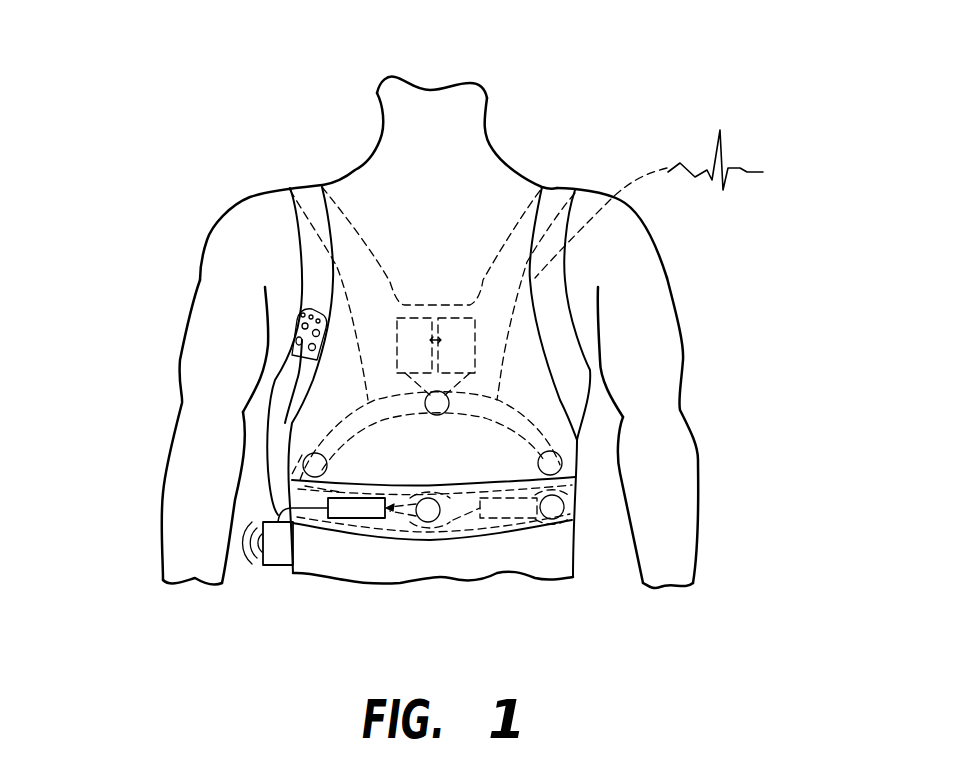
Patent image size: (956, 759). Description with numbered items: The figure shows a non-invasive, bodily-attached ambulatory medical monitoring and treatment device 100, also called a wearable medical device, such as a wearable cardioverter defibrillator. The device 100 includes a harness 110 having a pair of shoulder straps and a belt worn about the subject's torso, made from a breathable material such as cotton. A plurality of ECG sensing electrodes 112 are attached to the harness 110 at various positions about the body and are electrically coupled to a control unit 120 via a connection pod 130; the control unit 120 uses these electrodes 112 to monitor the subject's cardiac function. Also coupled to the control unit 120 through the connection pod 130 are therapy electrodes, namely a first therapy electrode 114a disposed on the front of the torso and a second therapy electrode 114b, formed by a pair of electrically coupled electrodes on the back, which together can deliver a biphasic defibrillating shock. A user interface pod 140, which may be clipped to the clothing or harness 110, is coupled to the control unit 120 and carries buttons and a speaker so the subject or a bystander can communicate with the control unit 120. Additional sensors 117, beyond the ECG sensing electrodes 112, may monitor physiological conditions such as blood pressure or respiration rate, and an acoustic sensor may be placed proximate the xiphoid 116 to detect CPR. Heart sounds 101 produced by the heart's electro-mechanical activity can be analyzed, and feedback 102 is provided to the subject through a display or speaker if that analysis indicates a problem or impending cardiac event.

The wearable medical device 100 is at (208, 97).
The heart sounds 101 is at (732, 163).
The feedback 102 is at (247, 563).
The harness 110 is at (555, 183).
The ECG sensing electrodes 112 is at (307, 458).
The first therapy electrode 114a is at (507, 520).
The second therapy electrode 114b is at (397, 330).
The xiphoid 116 is at (420, 292).
The additional sensors 117 is at (570, 528).
The control unit 120 is at (263, 522).
The connection pod 130 is at (347, 518).
The user interface pod 140 is at (300, 338).